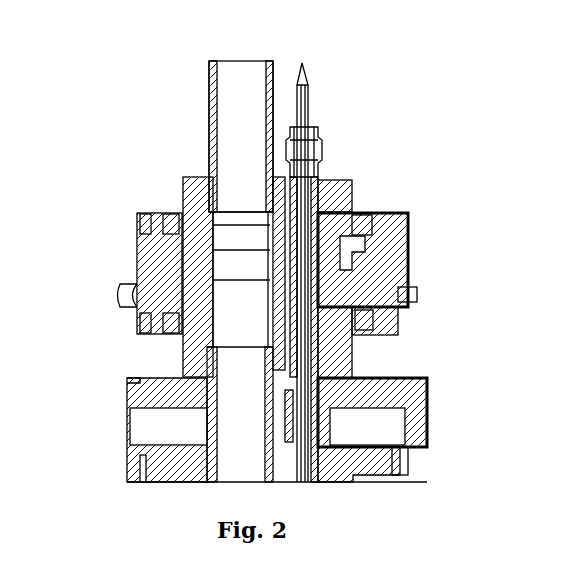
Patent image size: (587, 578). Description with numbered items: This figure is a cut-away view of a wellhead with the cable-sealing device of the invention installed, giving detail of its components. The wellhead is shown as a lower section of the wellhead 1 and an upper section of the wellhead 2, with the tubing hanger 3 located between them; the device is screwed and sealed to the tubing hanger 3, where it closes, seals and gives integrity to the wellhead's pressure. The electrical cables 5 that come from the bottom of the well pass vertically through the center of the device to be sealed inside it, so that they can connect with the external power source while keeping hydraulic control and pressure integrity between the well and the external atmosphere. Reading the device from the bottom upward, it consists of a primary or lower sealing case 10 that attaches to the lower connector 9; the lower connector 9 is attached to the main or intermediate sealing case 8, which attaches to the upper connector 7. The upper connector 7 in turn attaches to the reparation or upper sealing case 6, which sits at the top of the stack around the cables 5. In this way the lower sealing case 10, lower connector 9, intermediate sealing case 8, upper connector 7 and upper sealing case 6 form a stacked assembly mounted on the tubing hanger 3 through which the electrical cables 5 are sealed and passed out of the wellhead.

The lower section of the wellhead 1 is at (244, 329).
The upper section of the wellhead 2 is at (179, 136).
The tubing hanger 3 is at (132, 273).
The electrical cables 5 is at (303, 256).
The upper sealing case 6 is at (337, 146).
The upper connector 7 is at (367, 194).
The intermediate sealing case 8 is at (408, 258).
The lower connector 9 is at (381, 342).
The lower sealing case 10 is at (427, 409).